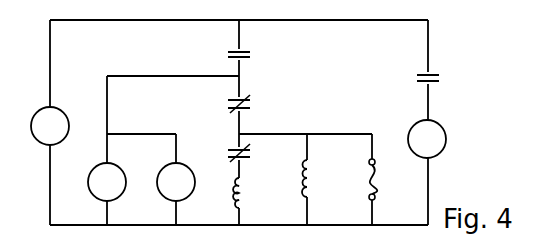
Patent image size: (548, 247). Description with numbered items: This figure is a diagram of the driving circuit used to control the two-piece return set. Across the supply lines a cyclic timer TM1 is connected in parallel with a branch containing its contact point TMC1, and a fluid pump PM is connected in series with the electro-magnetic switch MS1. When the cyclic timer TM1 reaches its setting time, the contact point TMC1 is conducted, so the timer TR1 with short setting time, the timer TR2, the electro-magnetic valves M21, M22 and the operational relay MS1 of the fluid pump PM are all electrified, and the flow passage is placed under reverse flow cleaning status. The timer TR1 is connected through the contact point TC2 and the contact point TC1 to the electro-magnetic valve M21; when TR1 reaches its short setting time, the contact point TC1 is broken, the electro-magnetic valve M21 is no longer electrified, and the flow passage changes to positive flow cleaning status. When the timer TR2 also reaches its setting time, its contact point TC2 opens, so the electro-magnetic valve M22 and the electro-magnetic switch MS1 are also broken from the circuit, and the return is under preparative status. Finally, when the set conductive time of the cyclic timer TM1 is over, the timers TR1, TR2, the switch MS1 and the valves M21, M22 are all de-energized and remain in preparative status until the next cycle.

The cyclic timer TM1 is at (50, 126).
The timer TR2 is at (107, 182).
The timer with short setting time TR1 is at (176, 182).
The fluid pump PM is at (427, 139).
The contact point TMC1 is at (258, 46).
The contact point TC2 is at (257, 104).
The contact point TC1 is at (254, 153).
The electro-magnetic valve M21 is at (255, 193).
The electro-magnetic valve M22 is at (322, 178).
The electro-magnetic switch MS1 is at (418, 131).